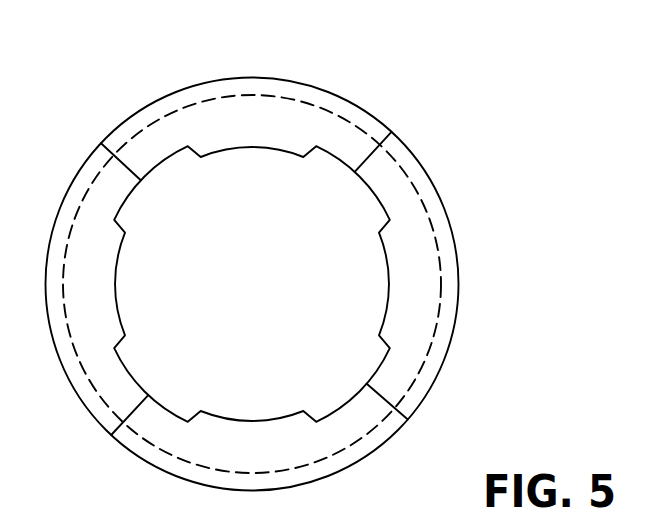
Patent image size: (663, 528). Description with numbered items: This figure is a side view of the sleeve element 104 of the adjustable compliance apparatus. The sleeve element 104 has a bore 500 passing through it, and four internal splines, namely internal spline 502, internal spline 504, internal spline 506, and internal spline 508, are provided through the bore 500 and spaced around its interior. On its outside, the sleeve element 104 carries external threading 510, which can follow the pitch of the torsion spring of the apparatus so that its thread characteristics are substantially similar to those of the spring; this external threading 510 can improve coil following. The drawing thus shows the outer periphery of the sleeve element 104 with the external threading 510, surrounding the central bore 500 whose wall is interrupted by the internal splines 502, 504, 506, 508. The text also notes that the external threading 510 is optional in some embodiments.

The sleeve element 104 is at (260, 77).
The bore 500 is at (285, 305).
The internal spline 502 is at (101, 143).
The internal spline 504 is at (392, 134).
The internal spline 506 is at (408, 420).
The internal spline 508 is at (110, 437).
The external threading 510 is at (437, 252).